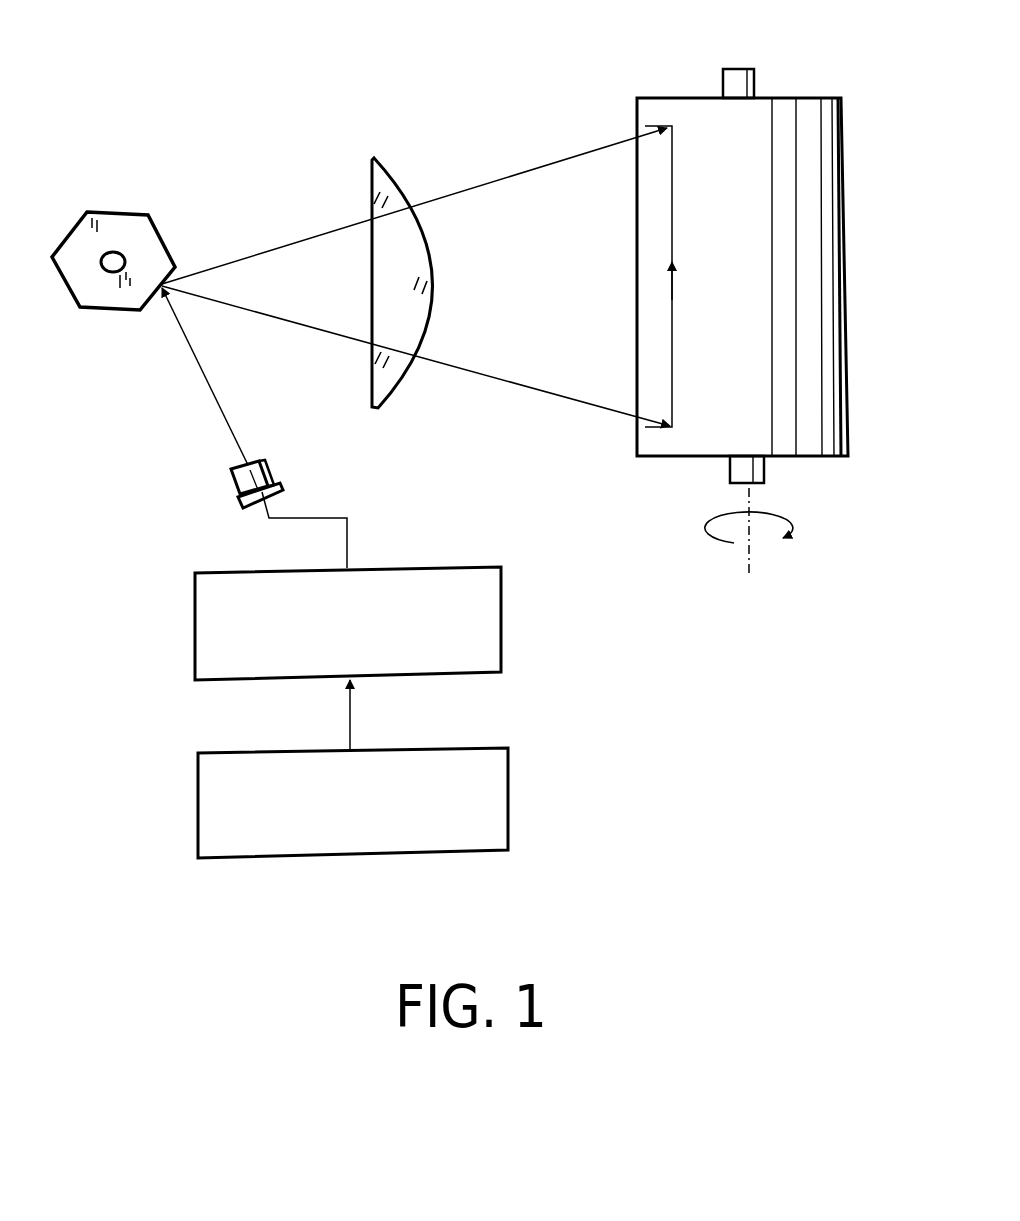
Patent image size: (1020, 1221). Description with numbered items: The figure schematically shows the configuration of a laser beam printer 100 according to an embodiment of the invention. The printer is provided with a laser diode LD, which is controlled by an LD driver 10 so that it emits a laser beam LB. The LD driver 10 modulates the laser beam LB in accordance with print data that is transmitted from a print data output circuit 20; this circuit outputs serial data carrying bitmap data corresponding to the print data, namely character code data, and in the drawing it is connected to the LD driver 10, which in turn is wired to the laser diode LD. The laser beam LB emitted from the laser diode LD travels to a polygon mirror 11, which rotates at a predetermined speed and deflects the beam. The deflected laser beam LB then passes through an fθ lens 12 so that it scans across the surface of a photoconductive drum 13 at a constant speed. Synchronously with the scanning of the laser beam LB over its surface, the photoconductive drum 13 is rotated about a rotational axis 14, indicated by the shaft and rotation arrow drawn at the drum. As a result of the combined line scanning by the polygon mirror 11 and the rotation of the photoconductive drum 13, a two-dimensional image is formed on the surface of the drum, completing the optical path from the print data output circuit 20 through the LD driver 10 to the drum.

The laser beam printer 100 is at (219, 76).
The polygon mirror 11 is at (128, 220).
The fθ lens 12 is at (393, 176).
The photoconductive drum 13 is at (827, 283).
The rotational axis 14 is at (735, 75).
The LD driver 10 is at (507, 618).
The print data output circuit 20 is at (508, 797).
The laser beam LB is at (198, 375).
The laser diode LD is at (263, 468).